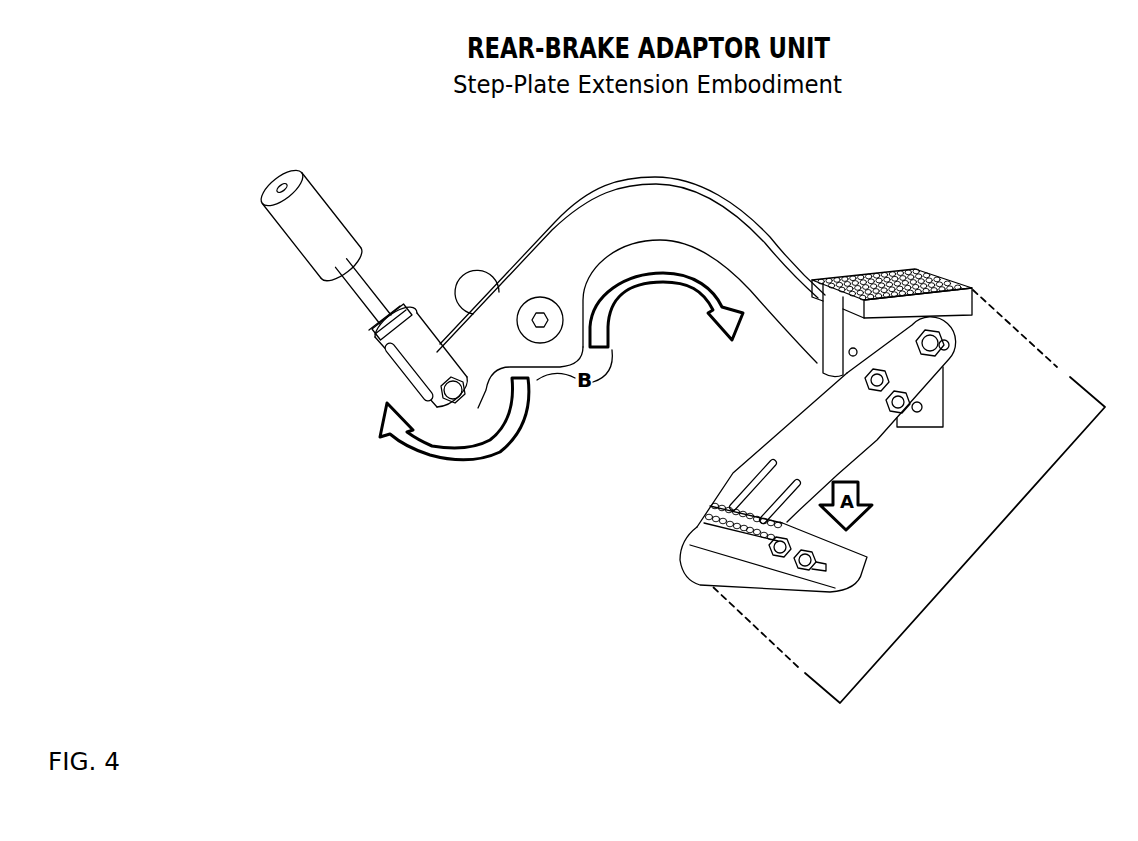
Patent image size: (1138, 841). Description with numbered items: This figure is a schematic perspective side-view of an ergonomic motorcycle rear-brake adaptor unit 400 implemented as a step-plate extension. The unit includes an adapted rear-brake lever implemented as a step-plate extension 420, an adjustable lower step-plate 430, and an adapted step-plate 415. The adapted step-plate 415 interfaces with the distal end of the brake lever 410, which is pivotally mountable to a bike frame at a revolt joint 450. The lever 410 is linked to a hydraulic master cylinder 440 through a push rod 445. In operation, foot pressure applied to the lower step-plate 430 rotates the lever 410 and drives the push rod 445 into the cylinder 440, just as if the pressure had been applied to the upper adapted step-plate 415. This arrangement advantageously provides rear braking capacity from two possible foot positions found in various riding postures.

The rear-brake adaptor unit 400 is at (983, 543).
The brake lever 410 is at (683, 183).
The adapted step-plate 415 is at (883, 267).
The step-plate extension 420 is at (872, 450).
The lower step-plate 430 is at (850, 580).
The hydraulic master cylinder 440 is at (330, 196).
The push rod 445 is at (360, 300).
The revolt joint 450 is at (540, 320).